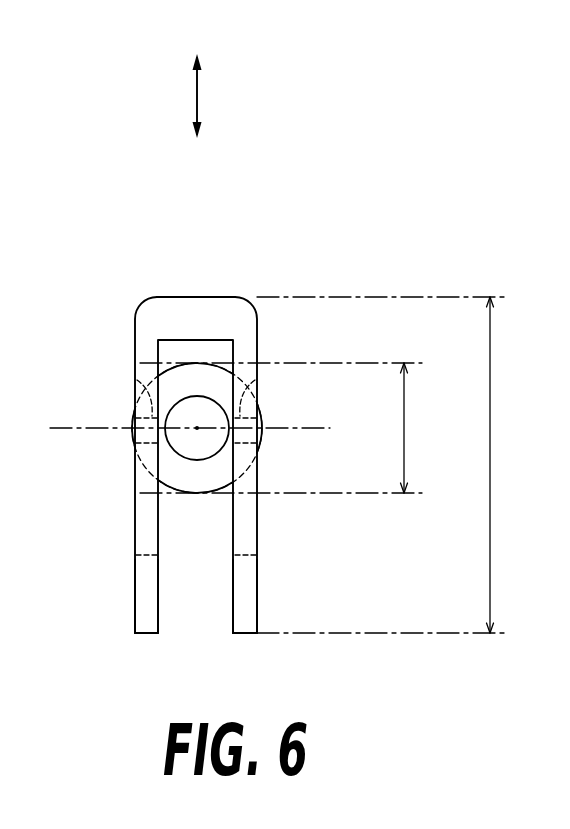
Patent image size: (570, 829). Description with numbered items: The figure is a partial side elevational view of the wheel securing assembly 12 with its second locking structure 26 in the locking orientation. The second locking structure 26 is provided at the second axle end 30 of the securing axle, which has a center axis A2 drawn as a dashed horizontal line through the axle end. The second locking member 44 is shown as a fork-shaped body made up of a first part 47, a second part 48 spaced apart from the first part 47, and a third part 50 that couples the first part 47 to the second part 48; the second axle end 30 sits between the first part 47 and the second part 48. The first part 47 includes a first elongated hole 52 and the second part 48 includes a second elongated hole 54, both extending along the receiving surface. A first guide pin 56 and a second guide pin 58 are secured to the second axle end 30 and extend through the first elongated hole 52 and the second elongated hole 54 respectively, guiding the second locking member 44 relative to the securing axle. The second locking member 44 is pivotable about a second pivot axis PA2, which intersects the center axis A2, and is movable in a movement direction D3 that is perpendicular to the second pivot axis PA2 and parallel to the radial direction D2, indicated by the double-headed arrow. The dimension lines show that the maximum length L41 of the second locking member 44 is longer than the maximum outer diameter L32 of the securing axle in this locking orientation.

The wheel securing assembly 12 is at (358, 216).
The second locking structure 26 is at (139, 259).
The second axle end 30 is at (187, 413).
The second locking member 44 is at (259, 291).
The first part 47 is at (148, 585).
The second part 48 is at (247, 597).
The third part 50 is at (197, 297).
The first elongated hole 52 is at (148, 555).
The second elongated hole 54 is at (246, 555).
The first guide pin 56 is at (137, 378).
The second guide pin 58 is at (255, 387).
The center axis A2 is at (197, 428).
The second pivot axis PA2 is at (313, 427).
The maximum outer diameter of the securing axle L32 is at (404, 398).
The maximum length of the second locking member L41 is at (490, 462).
The radial direction D2 is at (197, 101).
The movement direction D3 is at (233, 82).